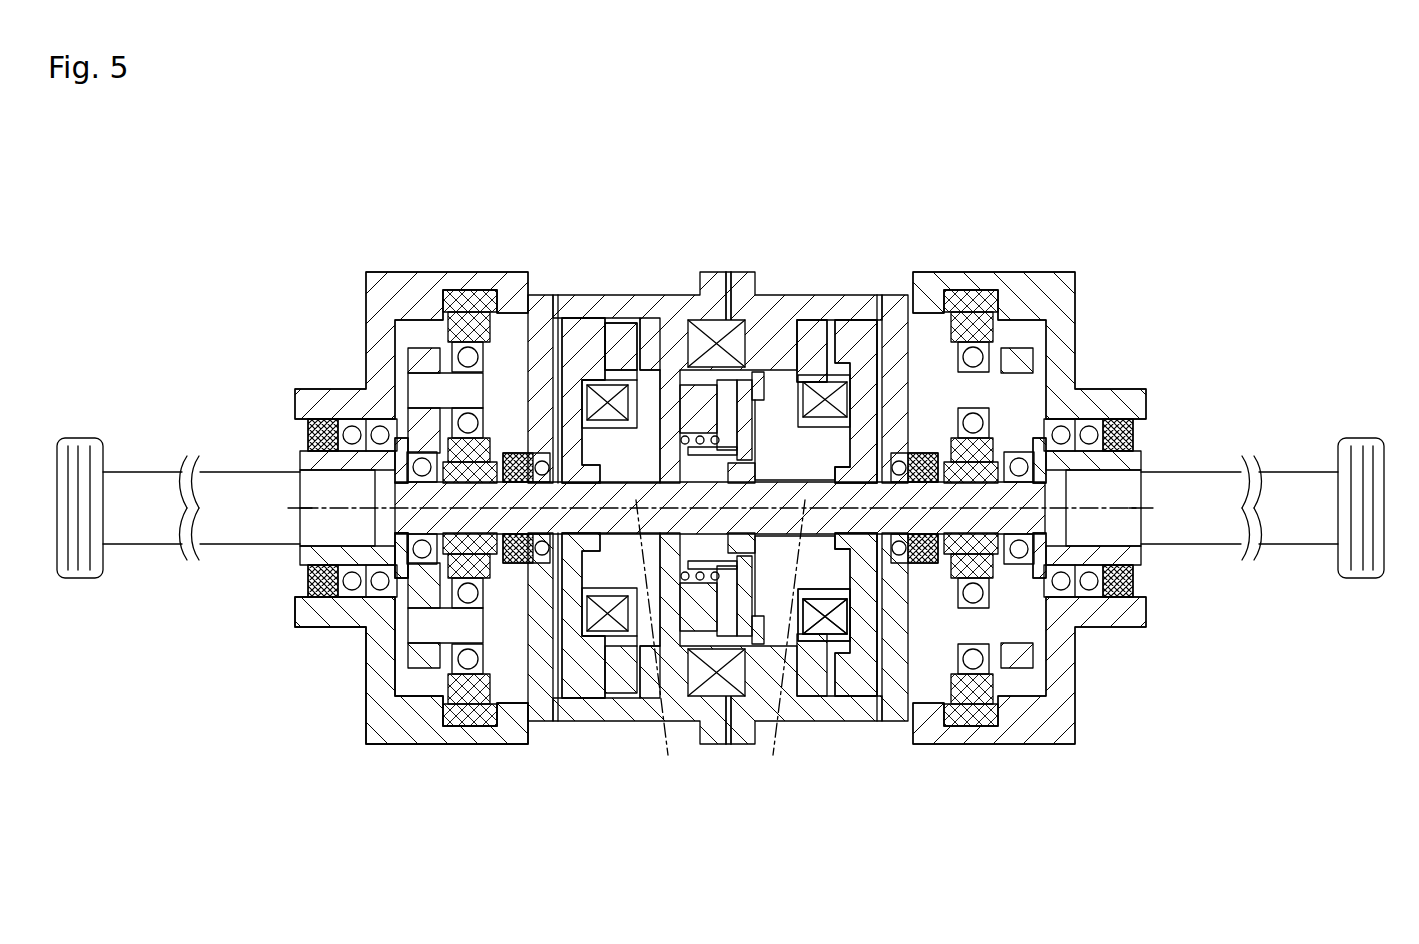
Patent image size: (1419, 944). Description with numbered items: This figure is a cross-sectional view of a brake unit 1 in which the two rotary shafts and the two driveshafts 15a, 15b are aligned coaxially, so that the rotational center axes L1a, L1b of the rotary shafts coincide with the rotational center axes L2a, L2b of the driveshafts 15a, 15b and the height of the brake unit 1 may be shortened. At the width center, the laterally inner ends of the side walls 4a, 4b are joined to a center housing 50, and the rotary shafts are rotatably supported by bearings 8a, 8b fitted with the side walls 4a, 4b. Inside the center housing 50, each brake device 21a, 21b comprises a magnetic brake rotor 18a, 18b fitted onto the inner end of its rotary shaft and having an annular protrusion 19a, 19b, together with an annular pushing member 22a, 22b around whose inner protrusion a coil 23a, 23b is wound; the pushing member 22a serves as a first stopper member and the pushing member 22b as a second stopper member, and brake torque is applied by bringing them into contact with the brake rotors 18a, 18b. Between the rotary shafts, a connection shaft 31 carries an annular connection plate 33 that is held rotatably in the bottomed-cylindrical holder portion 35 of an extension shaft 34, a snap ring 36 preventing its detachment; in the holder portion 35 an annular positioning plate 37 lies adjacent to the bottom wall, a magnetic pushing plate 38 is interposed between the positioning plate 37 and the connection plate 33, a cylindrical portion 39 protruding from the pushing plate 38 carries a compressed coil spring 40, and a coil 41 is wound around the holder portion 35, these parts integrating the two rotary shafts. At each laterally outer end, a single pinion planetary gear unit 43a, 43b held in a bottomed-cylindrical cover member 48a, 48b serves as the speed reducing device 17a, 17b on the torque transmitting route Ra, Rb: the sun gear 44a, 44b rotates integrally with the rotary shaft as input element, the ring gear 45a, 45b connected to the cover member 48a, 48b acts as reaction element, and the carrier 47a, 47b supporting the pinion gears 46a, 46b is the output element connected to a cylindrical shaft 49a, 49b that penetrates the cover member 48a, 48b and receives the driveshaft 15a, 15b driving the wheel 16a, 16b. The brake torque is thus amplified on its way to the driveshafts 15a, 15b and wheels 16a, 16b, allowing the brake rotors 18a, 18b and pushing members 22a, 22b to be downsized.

The brake unit 1 is at (280, 788).
The side wall 4a is at (905, 640).
The side wall 4b is at (570, 640).
The bearing 8a is at (920, 462).
The bearing 8b is at (522, 560).
The driveshaft 15a is at (1230, 535).
The driveshaft 15b is at (152, 530).
The wheel 16a is at (1358, 580).
The wheel 16b is at (80, 580).
The speed reducing device 17a is at (995, 224).
The speed reducing device 17b is at (405, 218).
The brake rotor 18a is at (890, 320).
The brake rotor 18b is at (562, 320).
The annular protrusion 19a is at (858, 340).
The annular protrusion 19b is at (575, 343).
The brake device 21a is at (868, 208).
The brake device 21b is at (582, 202).
The pushing member 22a is at (810, 332).
The pushing member 22b is at (627, 332).
The electromagnetic coil 23a is at (825, 400).
The electromagnetic coil 23b is at (480, 388).
The connection shaft 31 is at (822, 490).
The connection plate 33 is at (752, 440).
The extension shaft 34 is at (640, 490).
The holder portion 35 is at (700, 395).
The snap ring 36 is at (760, 385).
The positioning plate 37 is at (648, 330).
The pushing plate 38 is at (720, 340).
The cylindrical portion 39 is at (705, 457).
The coil spring 40 is at (705, 560).
The coil 41 is at (727, 300).
The planetary gear unit 43a is at (1038, 777).
The planetary gear unit 43b is at (441, 778).
The sun gear 44a is at (1140, 460).
The sun gear 44b is at (300, 458).
The ring gear 45a is at (990, 712).
The ring gear 45b is at (445, 730).
The pinion gear 46a is at (972, 700).
The pinion gear 46b is at (470, 700).
The carrier 47a is at (1020, 653).
The carrier 47b is at (420, 653).
The cover member 48a is at (1067, 332).
The cover member 48b is at (380, 342).
The cylindrical shaft 49a is at (1140, 556).
The cylindrical shaft 49b is at (405, 550).
The center housing 50 is at (736, 784).
The rotational center axis L1a is at (786, 648).
The rotational center axis L1b is at (670, 642).
The rotational center axis L2a is at (1150, 508).
The rotational center axis L2b is at (292, 508).
The torque transmitting route Ra is at (968, 167).
The torque transmitting route Rb is at (503, 212).